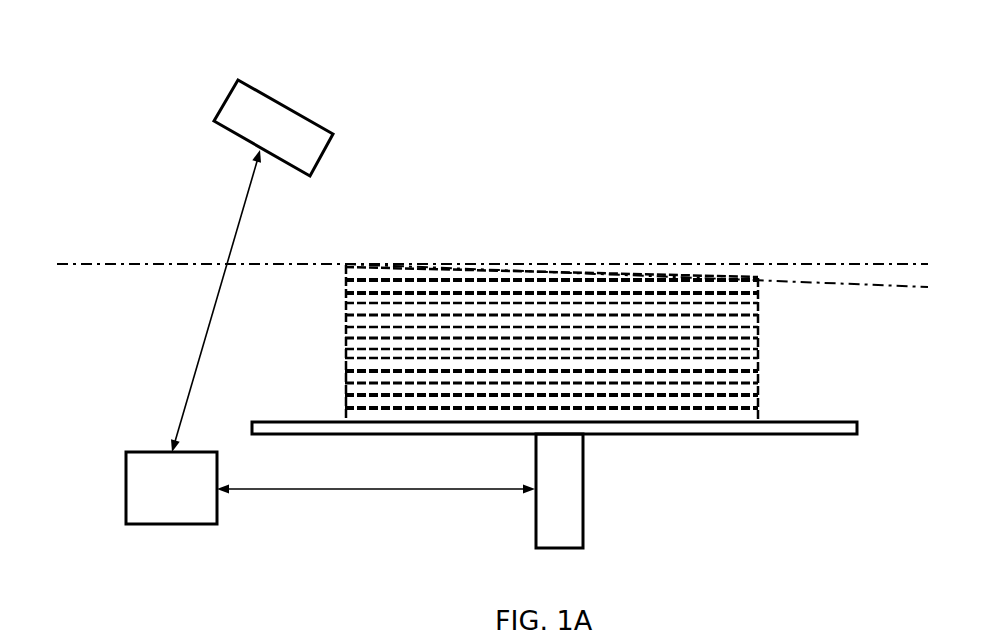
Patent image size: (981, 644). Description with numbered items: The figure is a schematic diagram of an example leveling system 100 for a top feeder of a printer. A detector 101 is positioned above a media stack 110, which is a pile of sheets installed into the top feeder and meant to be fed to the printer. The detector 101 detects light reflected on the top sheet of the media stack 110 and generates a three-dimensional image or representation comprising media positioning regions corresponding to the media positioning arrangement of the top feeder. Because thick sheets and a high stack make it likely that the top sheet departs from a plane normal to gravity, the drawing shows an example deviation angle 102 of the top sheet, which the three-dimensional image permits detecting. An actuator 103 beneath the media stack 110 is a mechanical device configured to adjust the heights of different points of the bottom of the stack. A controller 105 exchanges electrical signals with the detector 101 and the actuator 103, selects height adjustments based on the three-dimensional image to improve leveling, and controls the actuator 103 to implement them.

The leveling system 100 is at (137, 185).
The detector 101 is at (232, 93).
The deviation angle 102 is at (928, 280).
The actuator 103 is at (588, 492).
The controller 105 is at (172, 535).
The media stack 110 is at (782, 370).